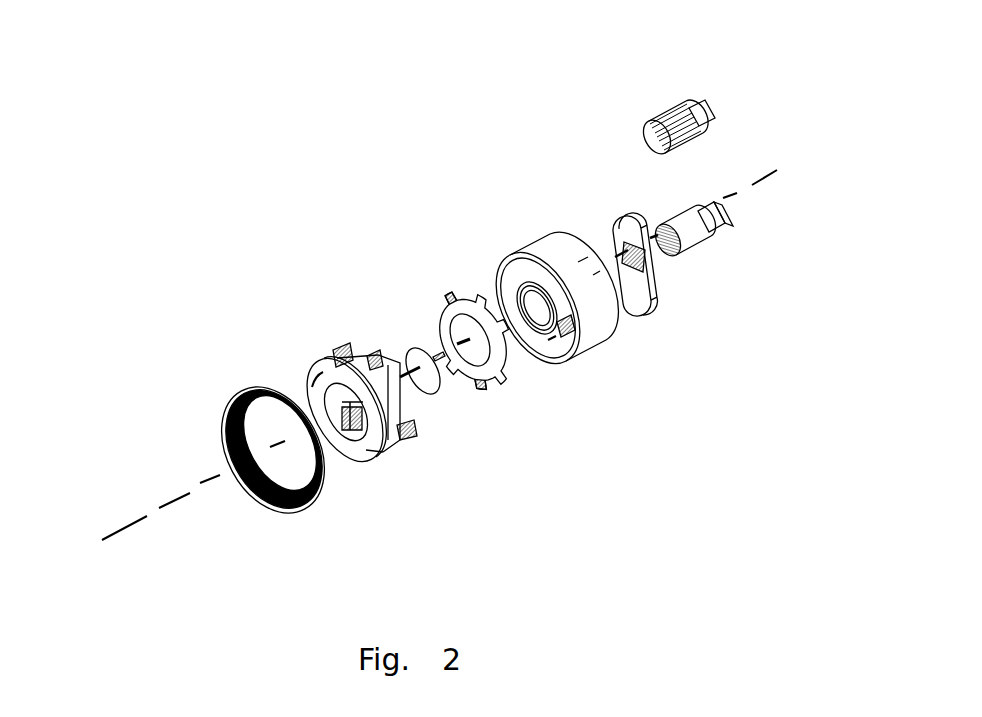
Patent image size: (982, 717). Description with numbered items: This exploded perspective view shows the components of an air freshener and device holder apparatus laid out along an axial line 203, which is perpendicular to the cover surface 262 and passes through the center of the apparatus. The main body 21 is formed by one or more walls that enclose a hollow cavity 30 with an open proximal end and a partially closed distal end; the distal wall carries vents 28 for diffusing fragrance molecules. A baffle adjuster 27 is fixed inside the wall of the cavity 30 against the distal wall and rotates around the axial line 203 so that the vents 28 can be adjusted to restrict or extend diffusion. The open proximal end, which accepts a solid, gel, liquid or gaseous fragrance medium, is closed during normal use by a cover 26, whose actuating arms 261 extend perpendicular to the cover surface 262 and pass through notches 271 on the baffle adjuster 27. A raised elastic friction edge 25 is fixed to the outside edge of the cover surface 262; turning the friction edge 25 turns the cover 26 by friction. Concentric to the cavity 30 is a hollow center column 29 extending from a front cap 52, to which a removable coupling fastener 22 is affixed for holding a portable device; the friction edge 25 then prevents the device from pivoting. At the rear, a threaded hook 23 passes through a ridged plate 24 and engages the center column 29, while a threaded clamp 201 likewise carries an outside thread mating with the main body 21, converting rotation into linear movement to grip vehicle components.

The threaded clamp 201 is at (700, 108).
The axial line 203 is at (412, 376).
The main body 21 is at (562, 315).
The coupling fastener 22 is at (443, 392).
The threaded hook 23 is at (683, 245).
The ridged plate 24 is at (640, 287).
The raised elastic friction edge 25 is at (227, 417).
The cover 26 is at (320, 351).
The actuating arms 261 is at (405, 367).
The cover surface 262 is at (312, 387).
The baffle adjuster 27 is at (470, 340).
The notches 271 is at (508, 388).
The vents 28 is at (580, 252).
The center column 29 is at (533, 272).
The cavity 30 is at (534, 452).
The front cap 52 is at (534, 300).